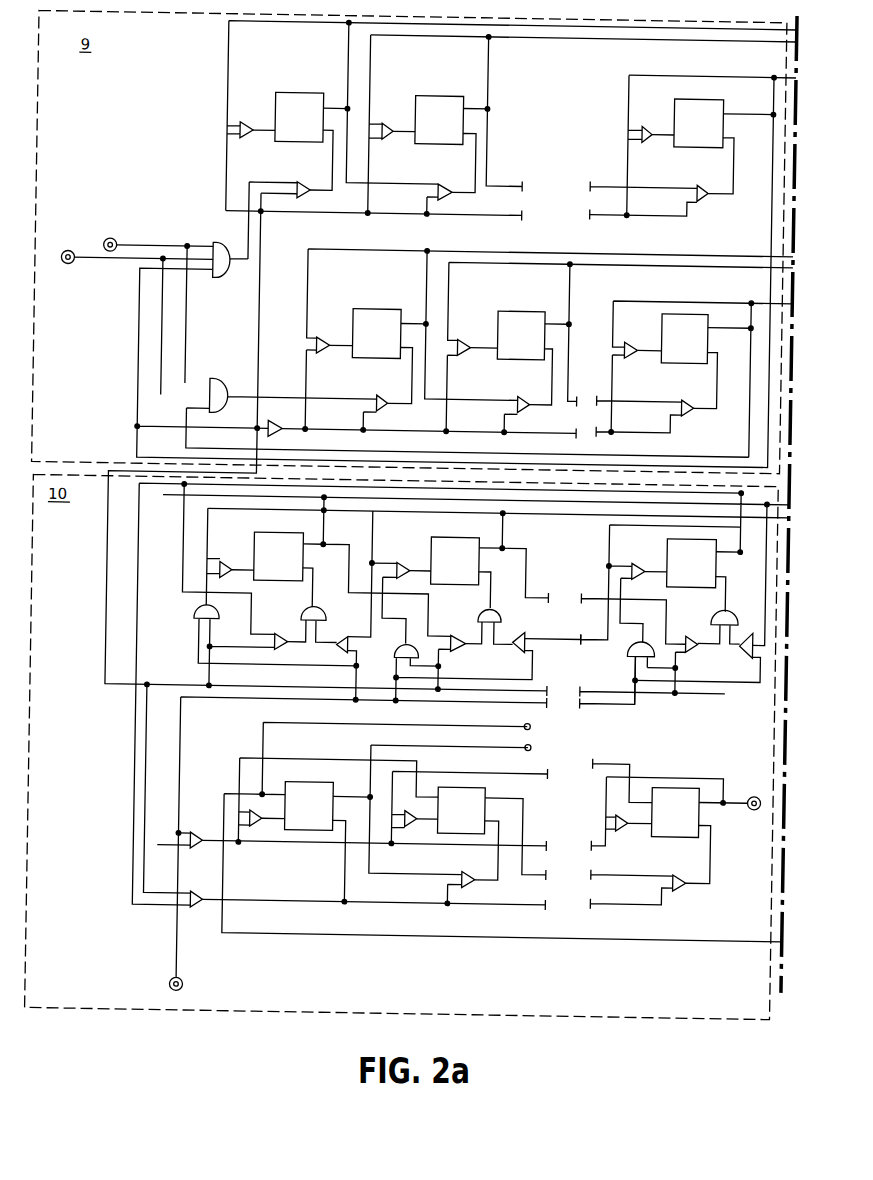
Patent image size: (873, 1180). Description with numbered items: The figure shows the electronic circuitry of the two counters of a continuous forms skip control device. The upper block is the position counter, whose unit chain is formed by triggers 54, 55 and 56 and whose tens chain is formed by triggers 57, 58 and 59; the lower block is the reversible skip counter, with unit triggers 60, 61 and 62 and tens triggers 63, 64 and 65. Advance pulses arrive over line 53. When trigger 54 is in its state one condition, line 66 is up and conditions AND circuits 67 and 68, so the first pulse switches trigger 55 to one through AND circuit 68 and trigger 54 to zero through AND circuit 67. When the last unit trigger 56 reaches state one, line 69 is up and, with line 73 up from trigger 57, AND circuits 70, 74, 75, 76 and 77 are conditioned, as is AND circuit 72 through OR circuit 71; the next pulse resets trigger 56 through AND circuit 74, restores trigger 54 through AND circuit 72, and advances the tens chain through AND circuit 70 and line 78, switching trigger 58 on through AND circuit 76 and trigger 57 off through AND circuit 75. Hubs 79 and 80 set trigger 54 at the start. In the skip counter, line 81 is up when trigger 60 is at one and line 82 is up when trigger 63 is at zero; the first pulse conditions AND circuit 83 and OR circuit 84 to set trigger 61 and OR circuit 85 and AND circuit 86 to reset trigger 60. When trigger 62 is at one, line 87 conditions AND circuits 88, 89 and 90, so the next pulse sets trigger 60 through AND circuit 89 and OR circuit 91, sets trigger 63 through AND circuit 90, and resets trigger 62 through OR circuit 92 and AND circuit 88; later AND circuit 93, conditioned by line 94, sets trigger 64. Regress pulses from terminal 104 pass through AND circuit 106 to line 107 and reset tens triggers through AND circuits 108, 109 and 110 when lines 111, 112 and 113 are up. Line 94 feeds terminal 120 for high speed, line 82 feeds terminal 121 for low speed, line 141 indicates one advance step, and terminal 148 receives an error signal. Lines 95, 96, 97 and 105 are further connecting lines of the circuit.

The line 53 is at (256, 316).
The unit trigger 54 is at (312, 98).
The unit trigger 55 is at (439, 95).
The unit trigger 56 is at (684, 98).
The tens trigger 57 is at (384, 315).
The tens trigger 58 is at (521, 313).
The tens trigger 59 is at (658, 318).
The unit trigger 60 is at (282, 539).
The unit trigger 61 is at (462, 540).
The unit trigger 62 is at (672, 538).
The tens trigger 63 is at (333, 790).
The tens trigger 64 is at (492, 789).
The tens trigger 65 is at (697, 784).
The line 66 is at (228, 53).
The AND circuit 67 is at (235, 127).
The AND circuit 68 is at (436, 186).
The line 69 is at (136, 318).
The AND circuit 70 is at (270, 424).
The OR circuit 71 is at (231, 238).
The AND circuit 72 is at (294, 186).
The line 73 is at (382, 251).
The AND circuit 74 is at (636, 121).
The AND circuit 75 is at (316, 340).
The AND circuit 76 is at (537, 397).
The AND circuit 77 is at (381, 400).
The line 78 is at (420, 433).
The hub 79 is at (108, 246).
The hub 80 is at (64, 270).
The line 81 is at (380, 502).
The line 82 is at (267, 727).
The AND circuit 83 is at (470, 634).
The OR circuit 84 is at (503, 610).
The OR circuit 85 is at (221, 618).
The AND circuit 86 is at (224, 566).
The line 87 is at (139, 634).
The AND circuit 88 is at (637, 563).
The AND circuit 89 is at (296, 637).
The AND circuit 90 is at (205, 908).
The OR circuit 91 is at (328, 608).
The OR circuit 92 is at (636, 641).
The AND circuit 93 is at (471, 872).
The line 94 is at (502, 747).
The connection line 95 is at (553, 38).
The connection line 96 is at (660, 263).
The connection line 97 is at (758, 298).
The terminal 104 is at (178, 984).
The connection line 105 is at (258, 703).
The AND circuit 106 is at (204, 833).
The line 107 is at (345, 845).
The AND circuit 108 is at (255, 828).
The AND circuit 109 is at (408, 827).
The AND circuit 110 is at (624, 826).
The line 111 is at (321, 764).
The line 112 is at (540, 782).
The line 113 is at (660, 772).
The terminal 120 is at (468, 745).
The terminal 121 is at (549, 726).
The line 141 is at (527, 512).
The terminal 148 is at (763, 792).